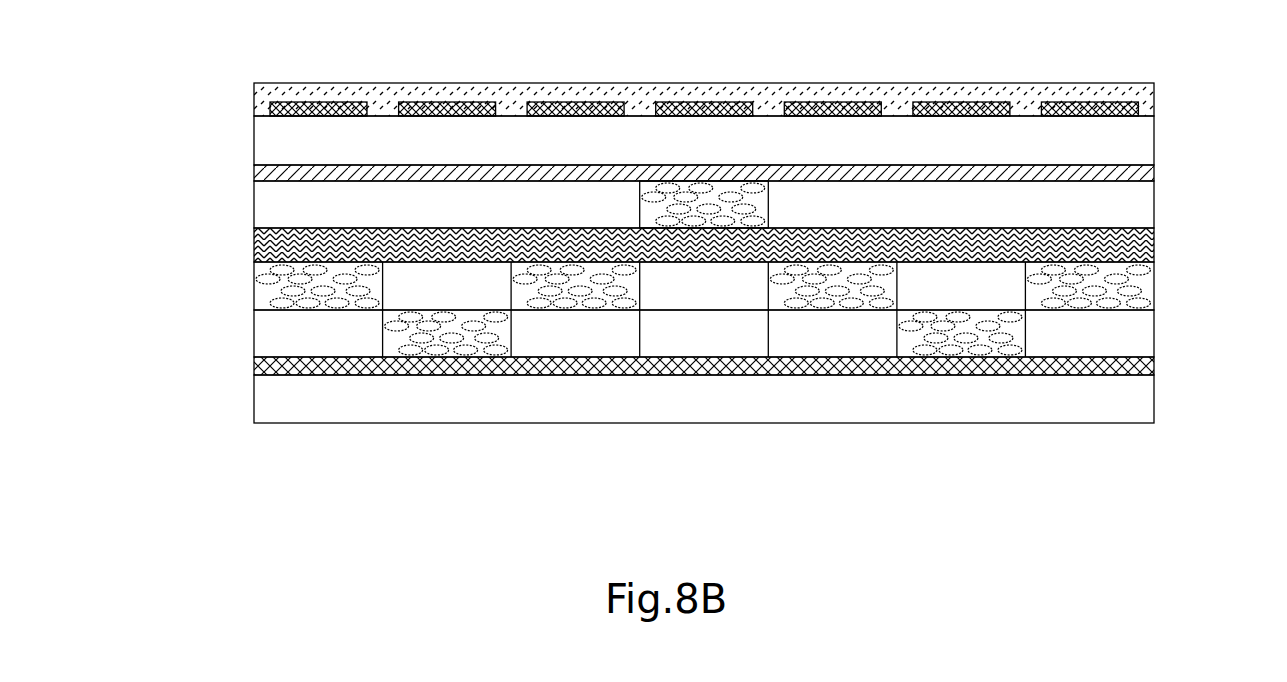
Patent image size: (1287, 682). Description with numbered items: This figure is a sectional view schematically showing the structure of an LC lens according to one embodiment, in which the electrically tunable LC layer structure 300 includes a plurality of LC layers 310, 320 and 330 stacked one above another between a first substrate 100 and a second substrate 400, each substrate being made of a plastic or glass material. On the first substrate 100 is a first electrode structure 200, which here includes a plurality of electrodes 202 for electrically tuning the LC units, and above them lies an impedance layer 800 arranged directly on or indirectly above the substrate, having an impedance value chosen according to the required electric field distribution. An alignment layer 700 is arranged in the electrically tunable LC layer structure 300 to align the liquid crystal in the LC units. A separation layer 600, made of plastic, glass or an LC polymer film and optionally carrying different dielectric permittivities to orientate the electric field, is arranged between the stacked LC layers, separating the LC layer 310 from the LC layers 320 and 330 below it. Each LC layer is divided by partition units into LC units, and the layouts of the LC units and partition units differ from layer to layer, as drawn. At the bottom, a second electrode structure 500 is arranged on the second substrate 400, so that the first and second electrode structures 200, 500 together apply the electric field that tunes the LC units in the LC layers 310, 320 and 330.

The impedance layer 800 is at (1140, 103).
The electrodes 202 is at (290, 100).
The first electrode structure 200 is at (704, 64).
The first substrate 100 is at (1147, 147).
The alignment layer 700 is at (1145, 172).
The electrically tunable LC layer structure 300 is at (128, 203).
The LC layer 310 is at (241, 217).
The LC layer 320 is at (243, 303).
The LC layer 330 is at (243, 360).
The separation layer 600 is at (1150, 245).
The second electrode structure 500 is at (1150, 362).
The second substrate 400 is at (1140, 413).